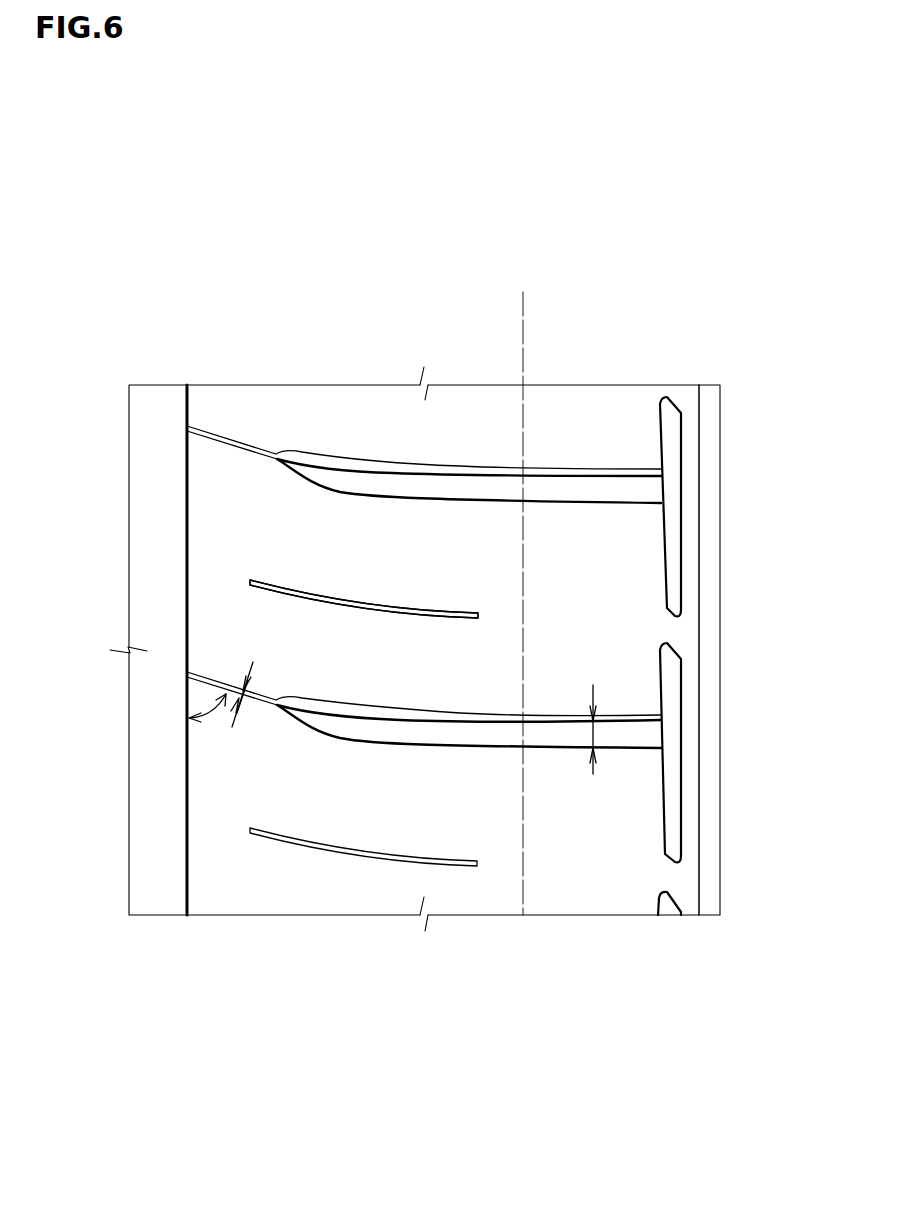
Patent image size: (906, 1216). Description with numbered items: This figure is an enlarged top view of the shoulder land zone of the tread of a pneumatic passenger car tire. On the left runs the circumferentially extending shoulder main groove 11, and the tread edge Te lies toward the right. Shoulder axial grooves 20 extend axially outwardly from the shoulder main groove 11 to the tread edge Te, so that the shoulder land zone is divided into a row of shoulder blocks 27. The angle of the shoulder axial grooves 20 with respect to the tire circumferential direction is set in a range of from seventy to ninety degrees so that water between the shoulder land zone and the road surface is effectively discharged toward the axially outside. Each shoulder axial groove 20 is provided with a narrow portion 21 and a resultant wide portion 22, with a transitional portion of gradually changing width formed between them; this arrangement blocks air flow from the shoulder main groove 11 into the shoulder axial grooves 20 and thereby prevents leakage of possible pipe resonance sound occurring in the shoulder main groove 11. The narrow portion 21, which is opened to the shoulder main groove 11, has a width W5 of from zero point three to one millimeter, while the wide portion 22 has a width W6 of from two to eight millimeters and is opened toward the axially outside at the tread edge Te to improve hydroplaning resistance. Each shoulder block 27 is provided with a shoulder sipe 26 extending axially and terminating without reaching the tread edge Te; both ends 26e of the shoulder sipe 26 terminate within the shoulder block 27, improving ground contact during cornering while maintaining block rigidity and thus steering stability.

The shoulder main groove 11 is at (165, 425).
The shoulder axial groove 20 is at (424, 660).
The narrow portion 21 is at (258, 703).
The wide portion 22 is at (367, 737).
The shoulder sipe 26 is at (353, 604).
The ends of the shoulder sipe 26e is at (250, 581).
The shoulder block 27 is at (502, 662).
The tread edge Te is at (521, 590).
The width of the narrow portion W5 is at (241, 692).
The width of the wide portion W6 is at (593, 738).